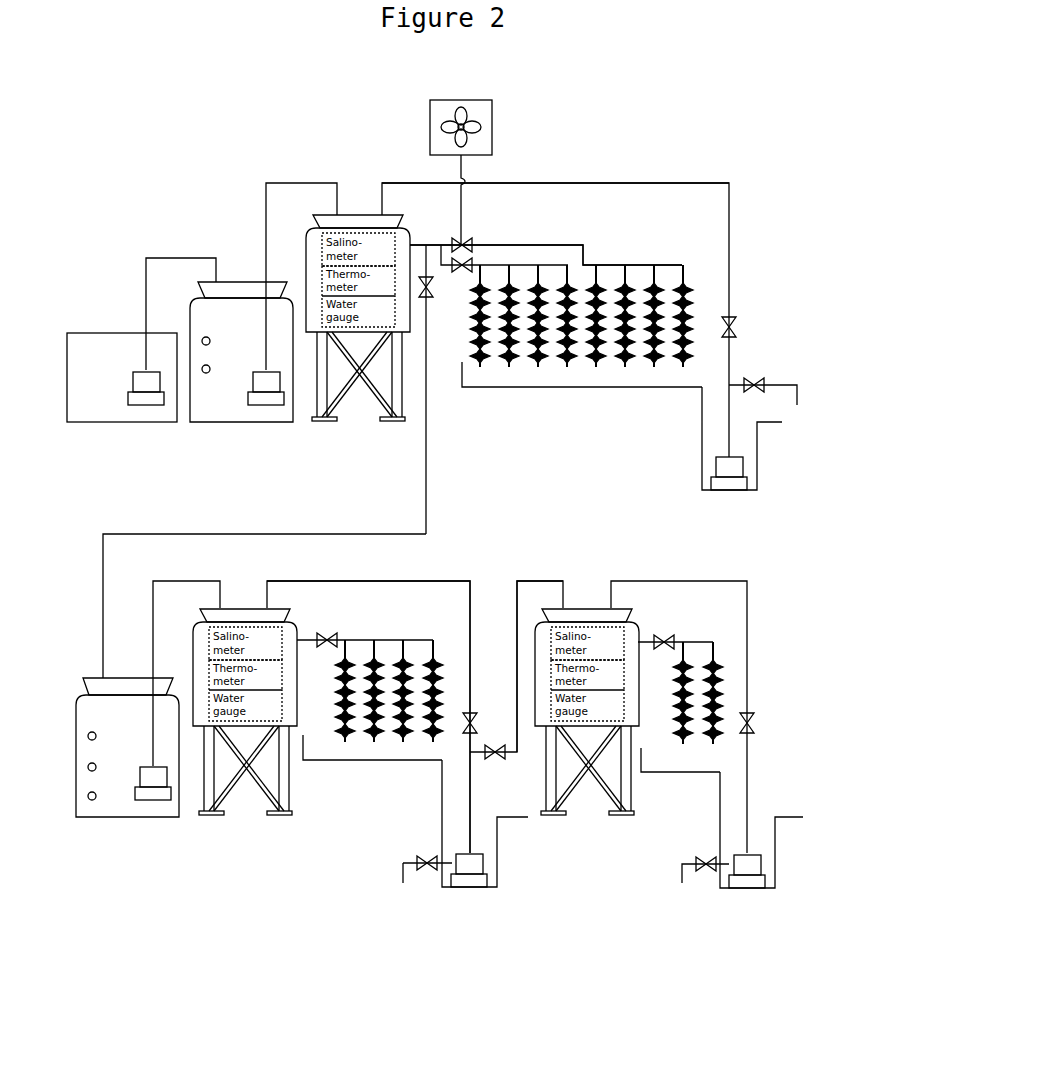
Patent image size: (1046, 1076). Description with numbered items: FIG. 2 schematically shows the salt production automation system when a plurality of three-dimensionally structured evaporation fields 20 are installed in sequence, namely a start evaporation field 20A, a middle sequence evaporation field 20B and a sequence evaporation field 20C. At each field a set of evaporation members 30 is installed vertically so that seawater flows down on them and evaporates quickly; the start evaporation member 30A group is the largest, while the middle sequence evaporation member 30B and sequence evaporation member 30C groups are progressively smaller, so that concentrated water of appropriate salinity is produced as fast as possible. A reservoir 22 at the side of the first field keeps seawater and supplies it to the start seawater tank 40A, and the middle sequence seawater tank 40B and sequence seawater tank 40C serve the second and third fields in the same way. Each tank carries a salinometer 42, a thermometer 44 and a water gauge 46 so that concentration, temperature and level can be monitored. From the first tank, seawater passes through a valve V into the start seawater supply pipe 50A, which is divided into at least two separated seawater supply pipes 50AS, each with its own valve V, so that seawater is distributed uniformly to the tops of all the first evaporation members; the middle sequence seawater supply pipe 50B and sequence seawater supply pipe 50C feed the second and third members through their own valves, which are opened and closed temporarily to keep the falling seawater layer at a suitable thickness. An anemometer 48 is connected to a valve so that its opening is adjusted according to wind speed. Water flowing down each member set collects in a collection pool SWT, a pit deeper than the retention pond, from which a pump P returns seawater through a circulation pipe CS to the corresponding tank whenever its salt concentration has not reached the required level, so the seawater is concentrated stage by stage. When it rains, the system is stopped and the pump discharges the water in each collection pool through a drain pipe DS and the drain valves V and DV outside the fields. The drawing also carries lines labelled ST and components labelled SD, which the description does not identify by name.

The evaporation field 20 is at (222, 1028).
The start evaporation field 20A is at (622, 400).
The middle sequence evaporation field 20B is at (330, 762).
The sequence evaporation field 20C is at (663, 785).
The reservoir 22 is at (101, 418).
The evaporation members 30 is at (360, 1020).
The start evaporation member 30A is at (705, 298).
The middle sequence evaporation member 30B is at (392, 742).
The sequence evaporation member 30C is at (730, 693).
The start seawater tank 40A is at (320, 198).
The middle sequence seawater tank 40B is at (242, 595).
The sequence seawater tank 40C is at (585, 598).
The salinometer 42 is at (360, 233).
The thermometer 44 is at (330, 275).
The water gauge 46 is at (330, 315).
The anemometer 48 is at (492, 125).
The start seawater supply pipe 50A is at (768, 85).
The separated seawater supply pipes 50AS is at (566, 257).
The middle sequence seawater supply pipe 50B is at (392, 640).
The sequence seawater supply pipe 50C is at (700, 642).
The circulation pipe CS is at (663, 183).
The supply pipe ST is at (322, 534).
The valve V is at (466, 242).
The pump P is at (155, 405).
The seawater storage tank SD is at (212, 420).
The collection pool SWT is at (760, 470).
The drain pipe DS is at (680, 875).
The drain valve DV is at (697, 865).